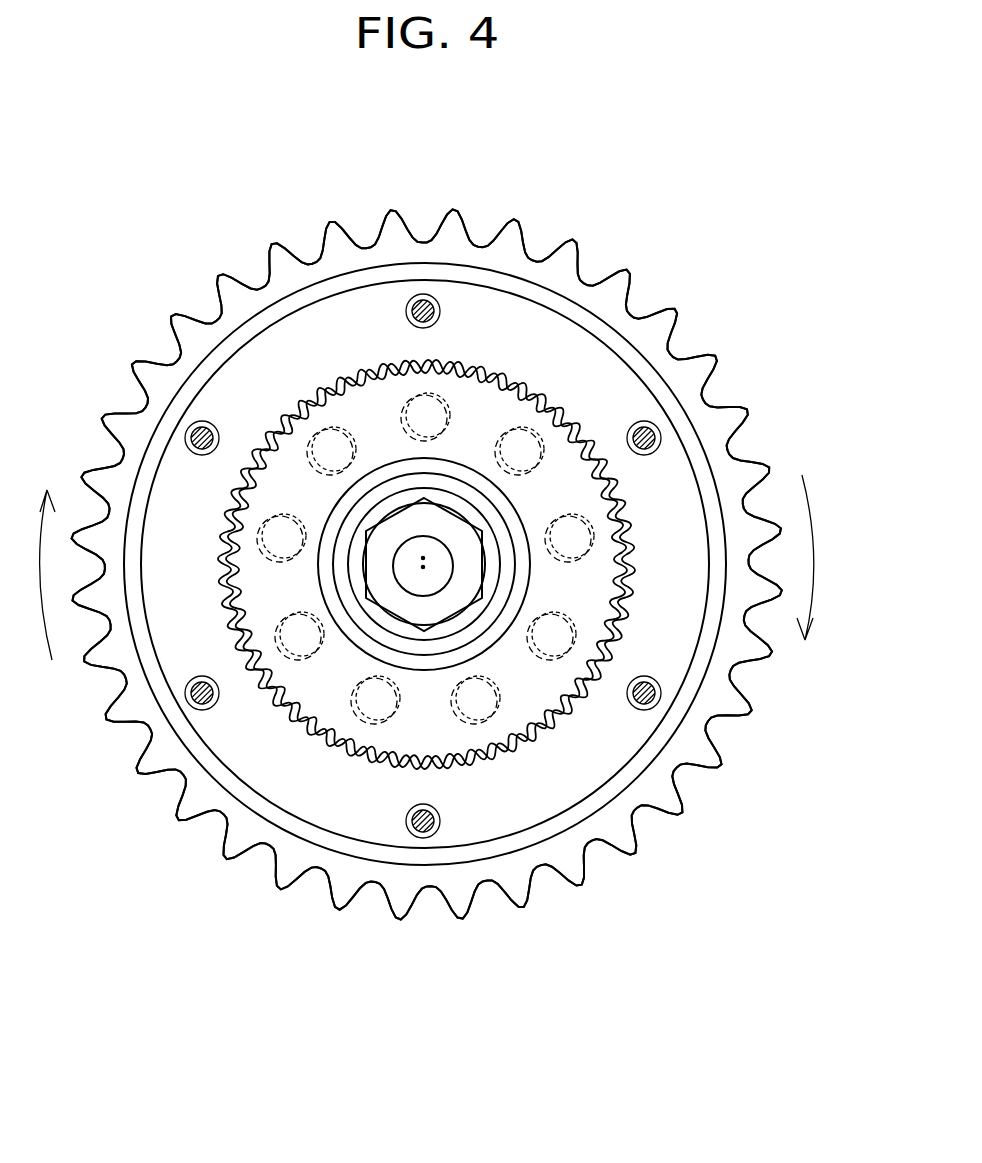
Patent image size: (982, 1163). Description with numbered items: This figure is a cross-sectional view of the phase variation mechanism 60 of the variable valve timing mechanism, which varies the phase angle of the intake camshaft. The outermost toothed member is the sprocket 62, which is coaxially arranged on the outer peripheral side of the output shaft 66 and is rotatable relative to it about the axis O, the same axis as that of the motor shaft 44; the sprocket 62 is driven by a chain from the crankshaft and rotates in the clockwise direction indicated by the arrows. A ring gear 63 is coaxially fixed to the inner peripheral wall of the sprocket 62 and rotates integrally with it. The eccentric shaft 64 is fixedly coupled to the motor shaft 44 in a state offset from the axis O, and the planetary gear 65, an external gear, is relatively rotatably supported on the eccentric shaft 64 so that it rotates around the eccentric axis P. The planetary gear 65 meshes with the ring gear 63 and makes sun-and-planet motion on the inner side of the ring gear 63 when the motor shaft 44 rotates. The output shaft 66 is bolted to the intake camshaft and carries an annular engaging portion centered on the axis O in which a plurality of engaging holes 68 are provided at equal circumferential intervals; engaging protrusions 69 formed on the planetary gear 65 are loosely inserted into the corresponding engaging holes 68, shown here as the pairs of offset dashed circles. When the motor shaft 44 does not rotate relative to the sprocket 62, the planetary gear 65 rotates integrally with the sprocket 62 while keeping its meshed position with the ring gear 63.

The phase variation mechanism 60 is at (609, 243).
The sprocket 62 is at (707, 723).
The ring gear 63 is at (370, 832).
The eccentric shaft 64 is at (447, 465).
The planetary gear 65 is at (565, 447).
The output shaft 66 is at (377, 638).
The engaging holes 68 is at (440, 405).
The engaging protrusions 69 is at (405, 398).
The motor shaft 44 is at (400, 567).
The eccentric axis P is at (423, 558).
The axis O is at (423, 567).